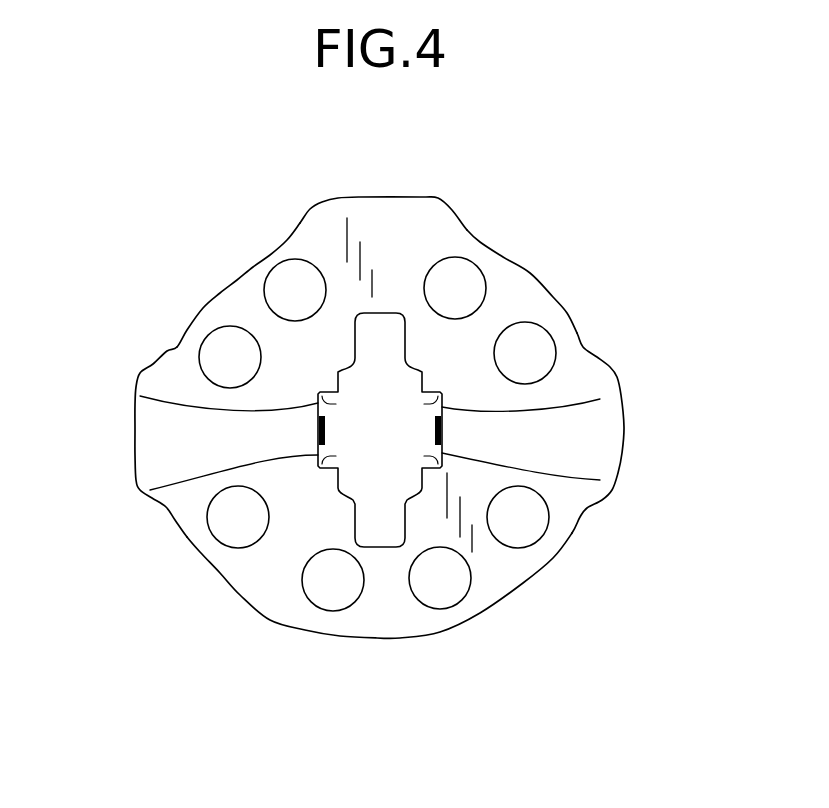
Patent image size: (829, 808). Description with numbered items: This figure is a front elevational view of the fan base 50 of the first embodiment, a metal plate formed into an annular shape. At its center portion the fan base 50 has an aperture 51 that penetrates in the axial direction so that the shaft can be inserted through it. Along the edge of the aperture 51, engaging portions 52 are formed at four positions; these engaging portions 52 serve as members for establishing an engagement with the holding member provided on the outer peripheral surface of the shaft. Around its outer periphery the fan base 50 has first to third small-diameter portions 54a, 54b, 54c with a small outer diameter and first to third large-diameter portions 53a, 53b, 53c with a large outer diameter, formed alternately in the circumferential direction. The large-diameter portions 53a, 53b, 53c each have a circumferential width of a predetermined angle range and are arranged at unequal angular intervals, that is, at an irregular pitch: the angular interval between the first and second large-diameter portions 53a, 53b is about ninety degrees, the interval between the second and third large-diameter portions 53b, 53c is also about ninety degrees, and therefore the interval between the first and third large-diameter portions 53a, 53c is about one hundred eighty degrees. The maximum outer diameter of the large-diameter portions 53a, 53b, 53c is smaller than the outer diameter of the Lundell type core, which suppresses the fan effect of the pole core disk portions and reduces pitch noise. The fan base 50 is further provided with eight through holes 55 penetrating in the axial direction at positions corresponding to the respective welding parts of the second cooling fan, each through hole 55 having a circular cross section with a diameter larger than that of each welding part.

The fan base 50 is at (490, 197).
The aperture 51 is at (398, 450).
The engaging portions 52 is at (140, 396).
The first large-diameter portion 53a is at (134, 440).
The second large-diameter portion 53b is at (380, 197).
The third large-diameter portion 53c is at (626, 432).
The first small-diameter portion 54a is at (210, 290).
The second small-diameter portion 54b is at (557, 300).
The third small-diameter portion 54c is at (375, 640).
The through holes 55 is at (231, 325).